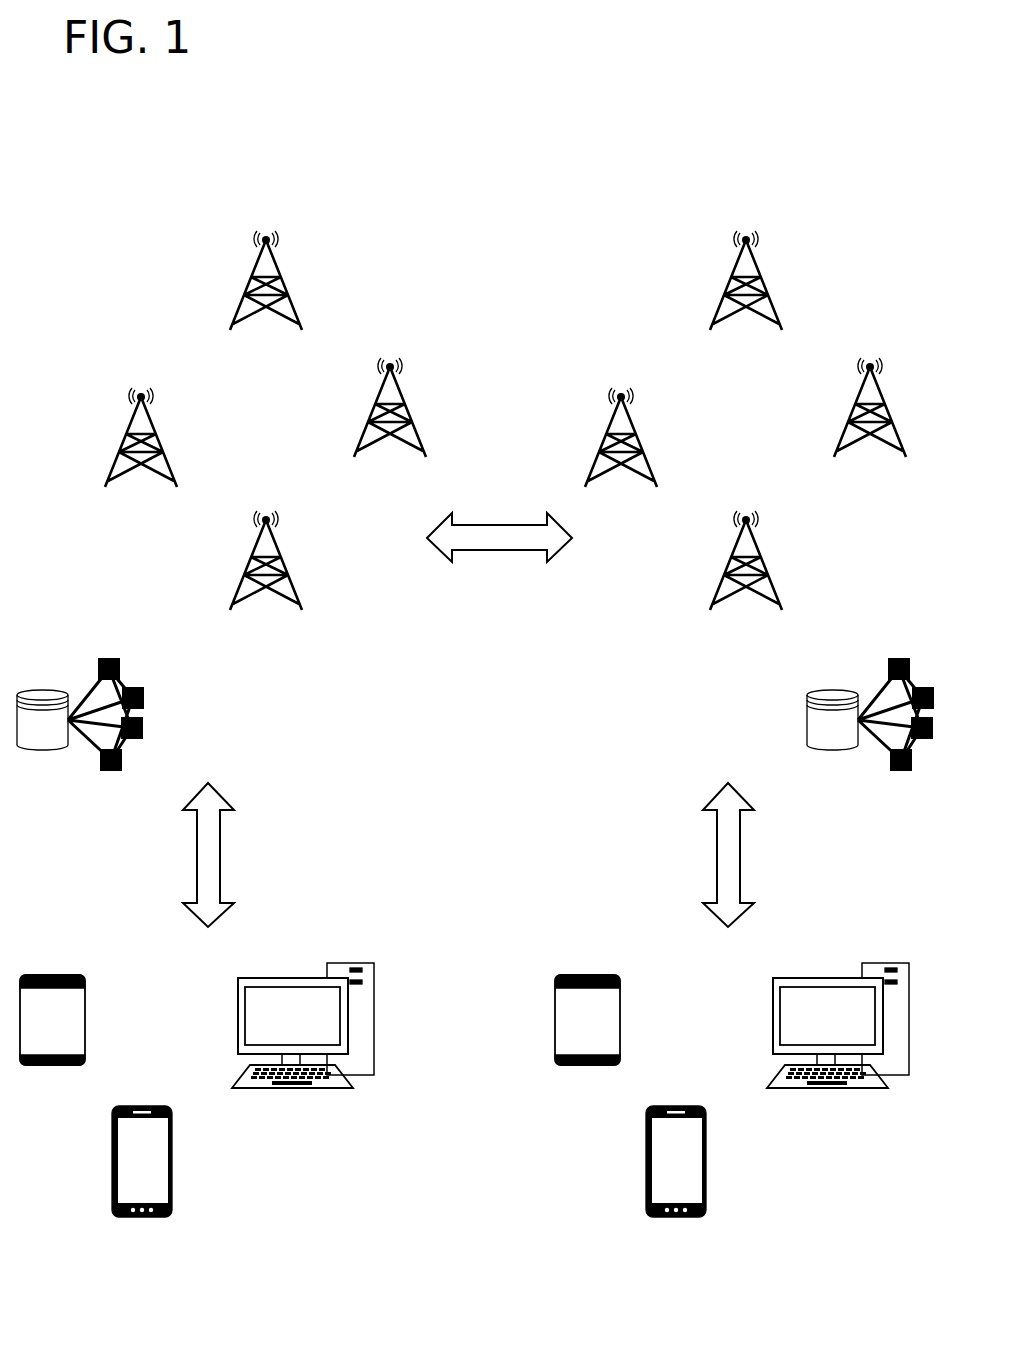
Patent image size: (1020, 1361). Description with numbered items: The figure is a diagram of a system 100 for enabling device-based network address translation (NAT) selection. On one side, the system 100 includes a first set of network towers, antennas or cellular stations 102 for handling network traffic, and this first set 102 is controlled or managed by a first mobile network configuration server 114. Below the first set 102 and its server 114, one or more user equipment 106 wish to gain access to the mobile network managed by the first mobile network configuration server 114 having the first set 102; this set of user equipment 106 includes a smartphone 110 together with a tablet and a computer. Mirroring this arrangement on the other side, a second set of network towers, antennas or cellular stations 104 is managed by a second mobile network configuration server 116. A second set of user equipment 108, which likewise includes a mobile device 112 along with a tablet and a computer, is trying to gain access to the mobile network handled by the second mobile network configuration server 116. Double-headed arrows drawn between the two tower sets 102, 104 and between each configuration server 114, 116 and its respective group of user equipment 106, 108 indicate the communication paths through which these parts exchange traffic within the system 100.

The system 100 is at (534, 104).
The first set of network towers, antennas or cellular stations 102 is at (89, 200).
The second set of network towers, antennas or cellular stations 104 is at (588, 200).
The user equipment 106 is at (17, 1218).
The second set of UE 108 is at (905, 1218).
The smartphone 110 is at (122, 1171).
The mobile device 112 is at (656, 1171).
The first mobile network configuration server 114 is at (140, 728).
The second mobile network configuration server 116 is at (816, 720).